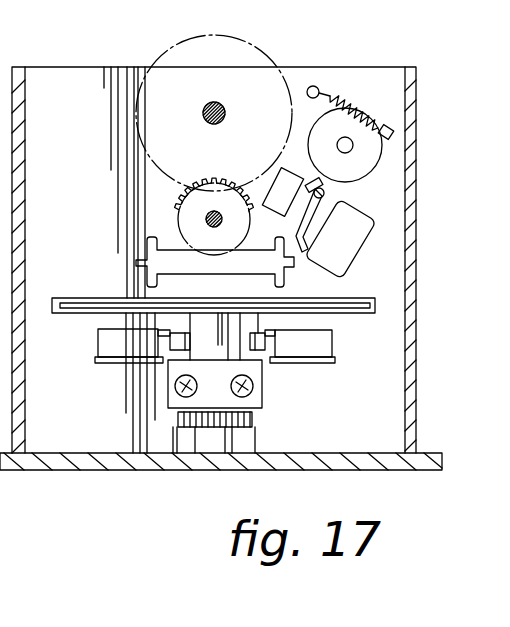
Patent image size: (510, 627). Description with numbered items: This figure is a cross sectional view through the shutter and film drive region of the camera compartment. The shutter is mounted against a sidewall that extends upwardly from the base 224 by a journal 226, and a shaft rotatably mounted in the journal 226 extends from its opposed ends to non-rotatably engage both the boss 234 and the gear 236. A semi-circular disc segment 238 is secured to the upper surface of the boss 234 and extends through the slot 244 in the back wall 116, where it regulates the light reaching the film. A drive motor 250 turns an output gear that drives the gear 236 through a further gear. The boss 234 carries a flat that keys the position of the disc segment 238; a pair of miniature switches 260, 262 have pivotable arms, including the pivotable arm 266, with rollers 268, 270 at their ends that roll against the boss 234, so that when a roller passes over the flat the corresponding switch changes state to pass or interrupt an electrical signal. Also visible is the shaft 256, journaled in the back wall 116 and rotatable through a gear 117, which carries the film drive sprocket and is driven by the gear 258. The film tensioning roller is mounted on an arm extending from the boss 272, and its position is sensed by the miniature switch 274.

The back wall 116 is at (53, 424).
The gear 117 is at (176, 210).
The base 224 is at (90, 442).
The journal 226 is at (263, 395).
The boss 234 is at (152, 300).
The gear 236 is at (218, 440).
The disc segment 238 is at (92, 303).
The slot 244 is at (72, 313).
The drive motor 250 is at (226, 112).
The shaft 256 is at (215, 262).
The gear 258 is at (264, 52).
The miniature switch 260 is at (99, 352).
The miniature switch 262 is at (333, 343).
The pivotable arm 266 is at (206, 220).
The roller 268 is at (172, 350).
The roller 270 is at (262, 353).
The boss 272 is at (356, 178).
The miniature switch 274 is at (352, 258).